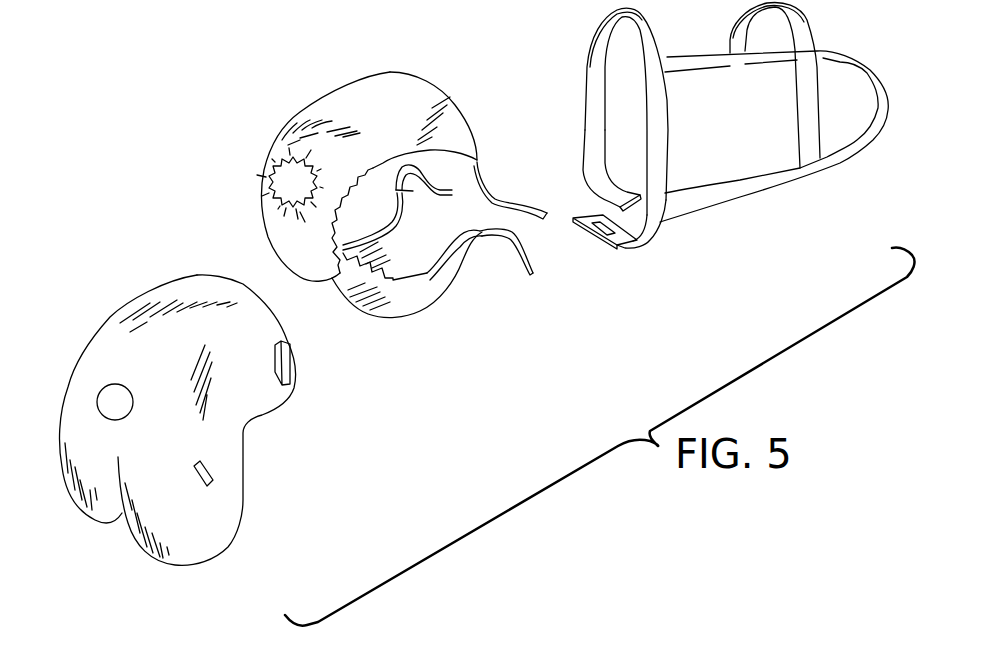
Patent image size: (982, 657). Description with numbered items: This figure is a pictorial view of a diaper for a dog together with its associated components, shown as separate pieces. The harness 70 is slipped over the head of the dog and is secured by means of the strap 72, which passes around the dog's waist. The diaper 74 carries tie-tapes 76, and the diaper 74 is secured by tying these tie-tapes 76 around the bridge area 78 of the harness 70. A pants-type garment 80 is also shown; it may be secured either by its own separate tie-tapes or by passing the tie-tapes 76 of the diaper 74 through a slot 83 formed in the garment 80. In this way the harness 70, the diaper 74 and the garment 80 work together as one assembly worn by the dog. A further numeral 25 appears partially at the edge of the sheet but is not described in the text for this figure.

The basket frame 70 is at (740, 145).
The strap loop 72 is at (660, 123).
The cushion pad 74 is at (333, 117).
The spring wire 76 is at (512, 250).
The tab foot 78 is at (665, 222).
The shell peg 80 is at (213, 483).
The shell slot 83 is at (290, 348).
The clipped numeral 25 is at (560, 656).